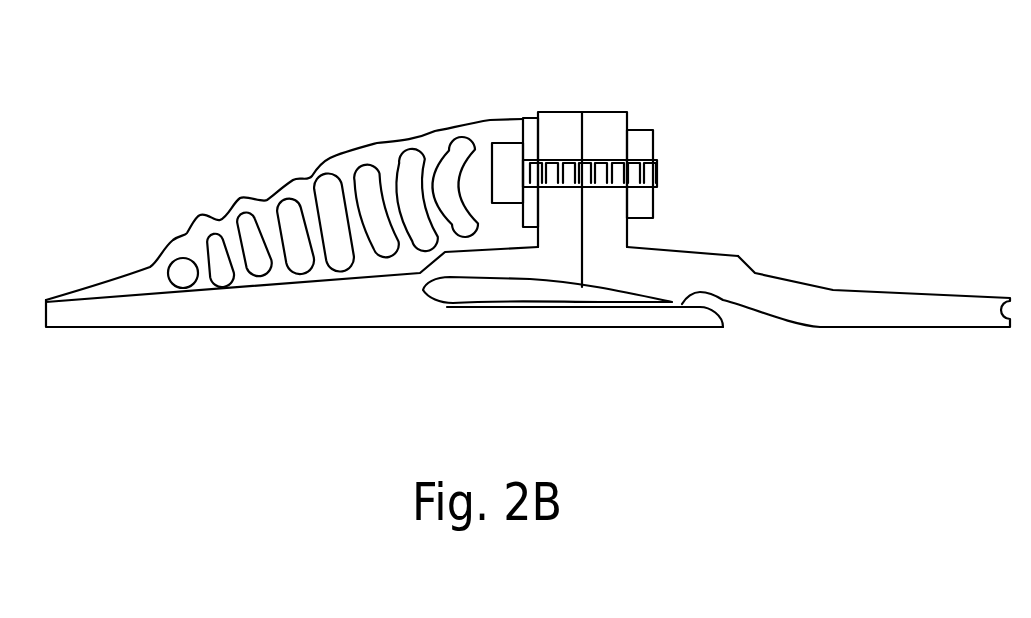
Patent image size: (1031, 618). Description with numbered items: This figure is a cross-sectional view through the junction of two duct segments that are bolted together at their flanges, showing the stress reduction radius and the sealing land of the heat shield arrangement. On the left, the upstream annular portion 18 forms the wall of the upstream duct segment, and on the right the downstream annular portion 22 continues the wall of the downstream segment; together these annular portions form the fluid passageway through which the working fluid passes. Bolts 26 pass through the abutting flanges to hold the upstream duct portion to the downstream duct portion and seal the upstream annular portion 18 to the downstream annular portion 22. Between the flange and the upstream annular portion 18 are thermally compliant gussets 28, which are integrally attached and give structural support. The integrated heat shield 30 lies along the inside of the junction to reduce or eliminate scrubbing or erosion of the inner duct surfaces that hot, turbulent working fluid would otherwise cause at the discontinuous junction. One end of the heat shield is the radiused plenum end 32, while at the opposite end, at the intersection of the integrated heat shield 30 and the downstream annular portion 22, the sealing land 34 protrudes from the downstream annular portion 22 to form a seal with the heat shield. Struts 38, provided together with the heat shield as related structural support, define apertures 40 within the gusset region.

The upstream annular portion 18 is at (138, 315).
The downstream annular portion 22 is at (890, 307).
The bolts 26 is at (598, 165).
The thermally compliant gussets 28 is at (432, 127).
The integrated heat shield 30 is at (450, 338).
The radiused plenum end 32 is at (417, 289).
The sealing land 34 is at (682, 270).
The struts 38 is at (387, 175).
The apertures 40 is at (242, 225).